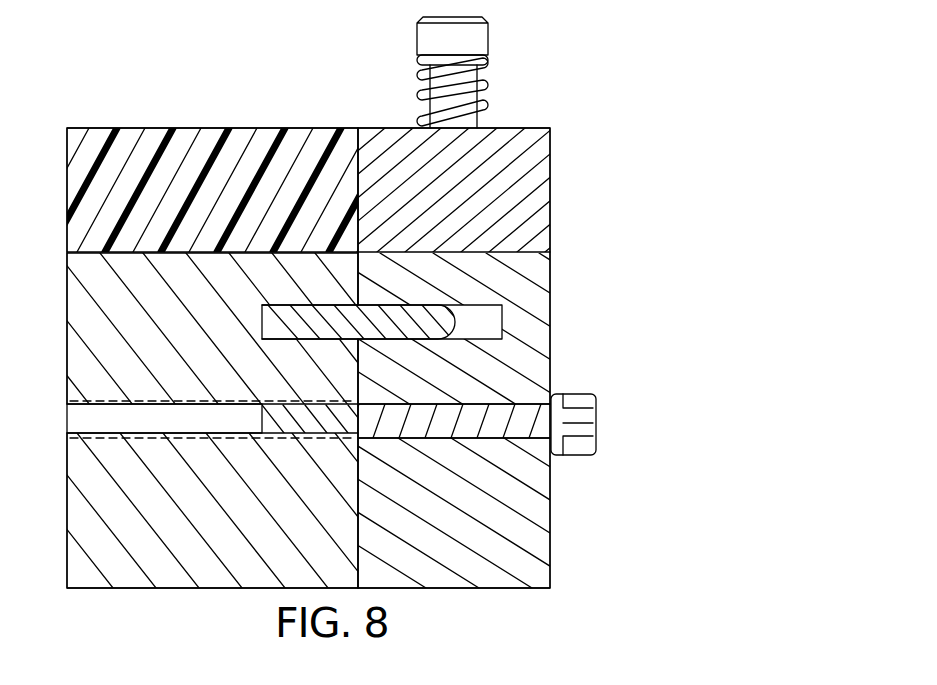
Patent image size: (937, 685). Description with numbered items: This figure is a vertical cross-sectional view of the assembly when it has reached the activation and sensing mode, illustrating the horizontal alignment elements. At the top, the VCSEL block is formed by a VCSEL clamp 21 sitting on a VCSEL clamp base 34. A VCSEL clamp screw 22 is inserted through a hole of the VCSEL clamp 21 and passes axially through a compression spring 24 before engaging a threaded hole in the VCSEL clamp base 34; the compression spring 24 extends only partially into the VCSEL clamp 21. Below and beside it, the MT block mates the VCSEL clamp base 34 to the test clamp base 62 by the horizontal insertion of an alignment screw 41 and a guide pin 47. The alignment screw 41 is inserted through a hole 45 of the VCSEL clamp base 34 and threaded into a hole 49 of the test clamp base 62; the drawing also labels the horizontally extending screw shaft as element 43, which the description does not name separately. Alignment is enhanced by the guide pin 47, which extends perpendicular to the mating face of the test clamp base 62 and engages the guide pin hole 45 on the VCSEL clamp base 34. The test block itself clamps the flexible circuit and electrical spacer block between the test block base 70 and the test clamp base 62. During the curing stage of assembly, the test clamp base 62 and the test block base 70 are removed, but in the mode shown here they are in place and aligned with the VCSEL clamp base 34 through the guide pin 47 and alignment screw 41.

The VCSEL clamp 21 is at (530, 200).
The VCSEL clamp screw 22 is at (490, 21).
The compression spring 24 is at (488, 83).
The VCSEL clamp base 34 is at (523, 538).
The alignment screw 41 is at (598, 445).
The bolt 43 is at (508, 403).
The hole 45 is at (495, 331).
The guide pin 47 is at (427, 307).
The threaded hole 49 is at (77, 424).
The test clamp base 62 is at (180, 150).
The test block base 70 is at (88, 328).